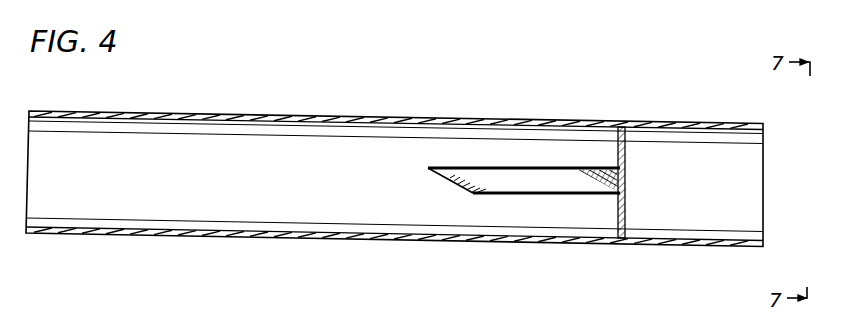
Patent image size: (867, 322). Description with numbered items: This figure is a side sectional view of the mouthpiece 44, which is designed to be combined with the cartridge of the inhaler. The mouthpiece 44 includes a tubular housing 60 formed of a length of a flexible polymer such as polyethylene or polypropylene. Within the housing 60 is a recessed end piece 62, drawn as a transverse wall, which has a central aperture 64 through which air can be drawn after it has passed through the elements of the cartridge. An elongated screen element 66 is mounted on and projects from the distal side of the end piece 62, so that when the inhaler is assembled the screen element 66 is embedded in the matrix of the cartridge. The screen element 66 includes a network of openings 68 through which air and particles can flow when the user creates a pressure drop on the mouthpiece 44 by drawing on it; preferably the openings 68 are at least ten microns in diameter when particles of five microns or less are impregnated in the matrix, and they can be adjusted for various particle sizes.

The mouthpiece 44 is at (340, 115).
The tubular housing 60 is at (323, 238).
The recessed end piece 62 is at (627, 134).
The central aperture 64 is at (625, 179).
The elongated screen element 66 is at (484, 167).
The openings 68 is at (538, 196).